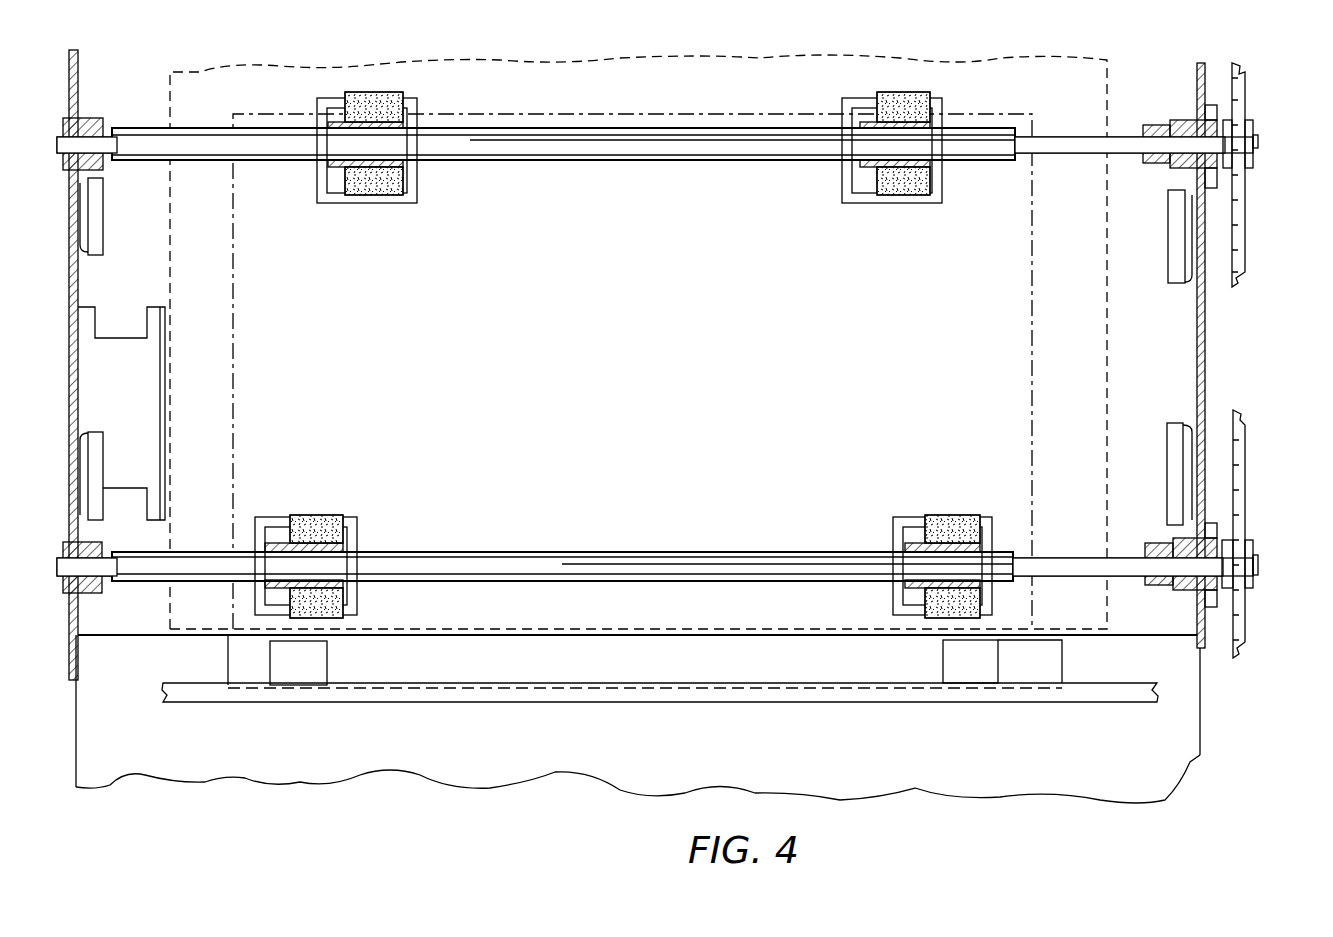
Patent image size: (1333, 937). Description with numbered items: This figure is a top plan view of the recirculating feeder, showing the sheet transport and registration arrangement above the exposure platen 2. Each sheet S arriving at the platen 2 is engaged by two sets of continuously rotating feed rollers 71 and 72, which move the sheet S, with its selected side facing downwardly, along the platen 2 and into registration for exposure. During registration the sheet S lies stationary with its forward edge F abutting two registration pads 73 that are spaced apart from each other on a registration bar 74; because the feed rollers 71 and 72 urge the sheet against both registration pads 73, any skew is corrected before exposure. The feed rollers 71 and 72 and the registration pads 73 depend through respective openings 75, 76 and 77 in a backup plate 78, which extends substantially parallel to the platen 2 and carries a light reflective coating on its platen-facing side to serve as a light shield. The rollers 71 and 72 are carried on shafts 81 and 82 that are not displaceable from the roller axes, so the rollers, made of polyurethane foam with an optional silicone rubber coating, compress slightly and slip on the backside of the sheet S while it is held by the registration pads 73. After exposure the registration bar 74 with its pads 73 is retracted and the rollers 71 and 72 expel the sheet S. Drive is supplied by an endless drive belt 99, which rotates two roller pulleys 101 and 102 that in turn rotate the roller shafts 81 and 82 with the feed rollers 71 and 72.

The platen 2 is at (240, 88).
The sheet S is at (526, 115).
The forward edge F is at (1003, 628).
The feed rollers 71 is at (364, 95).
The feed rollers 72 is at (325, 526).
The registration pads 73 is at (315, 663).
The registration bar 74 is at (565, 697).
The openings 75 is at (330, 192).
The openings 76 is at (272, 531).
The openings 77 is at (1037, 667).
The backup plate 78 is at (850, 167).
The shaft 81 is at (641, 147).
The shaft 82 is at (734, 566).
The endless drive belt 99 is at (1240, 222).
The roller pulley 101 is at (1250, 131).
The roller pulley 102 is at (1248, 551).